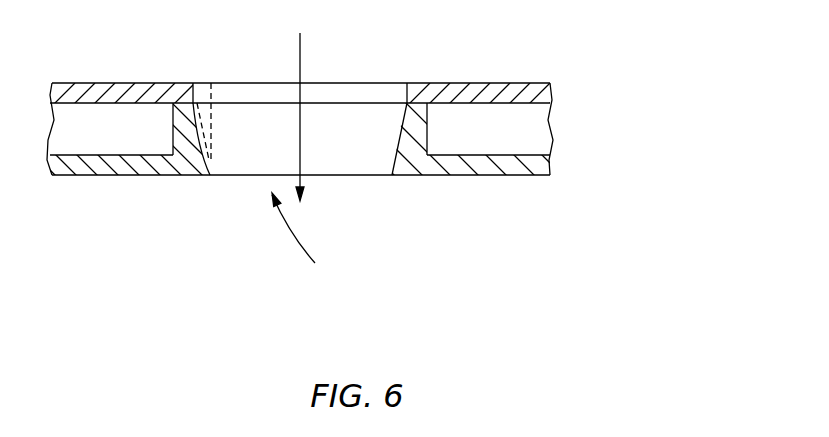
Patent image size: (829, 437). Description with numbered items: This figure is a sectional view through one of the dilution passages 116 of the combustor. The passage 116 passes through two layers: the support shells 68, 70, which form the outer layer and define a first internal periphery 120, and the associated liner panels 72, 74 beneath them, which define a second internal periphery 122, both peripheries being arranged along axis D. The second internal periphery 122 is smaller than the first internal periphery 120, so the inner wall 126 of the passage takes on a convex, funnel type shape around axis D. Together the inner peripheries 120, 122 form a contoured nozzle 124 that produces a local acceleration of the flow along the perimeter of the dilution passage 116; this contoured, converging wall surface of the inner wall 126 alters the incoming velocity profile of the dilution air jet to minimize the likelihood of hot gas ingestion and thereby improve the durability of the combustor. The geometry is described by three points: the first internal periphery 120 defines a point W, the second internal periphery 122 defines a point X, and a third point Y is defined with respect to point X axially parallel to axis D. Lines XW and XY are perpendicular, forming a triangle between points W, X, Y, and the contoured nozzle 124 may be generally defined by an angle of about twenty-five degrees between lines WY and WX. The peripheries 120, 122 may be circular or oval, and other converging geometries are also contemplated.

The support shell 68 is at (353, 129).
The support shell 70 is at (527, 93).
The liner panel 72 is at (303, 185).
The liner panel 74 is at (530, 167).
The dilution passage 116 is at (252, 158).
The first internal periphery 120 is at (203, 83).
The second internal periphery 122 is at (212, 159).
The contoured nozzle 124 is at (316, 240).
The inner wall 126 is at (392, 148).
The axis D is at (302, 55).
The point W is at (192, 83).
The point X is at (210, 177).
The point Y is at (212, 83).